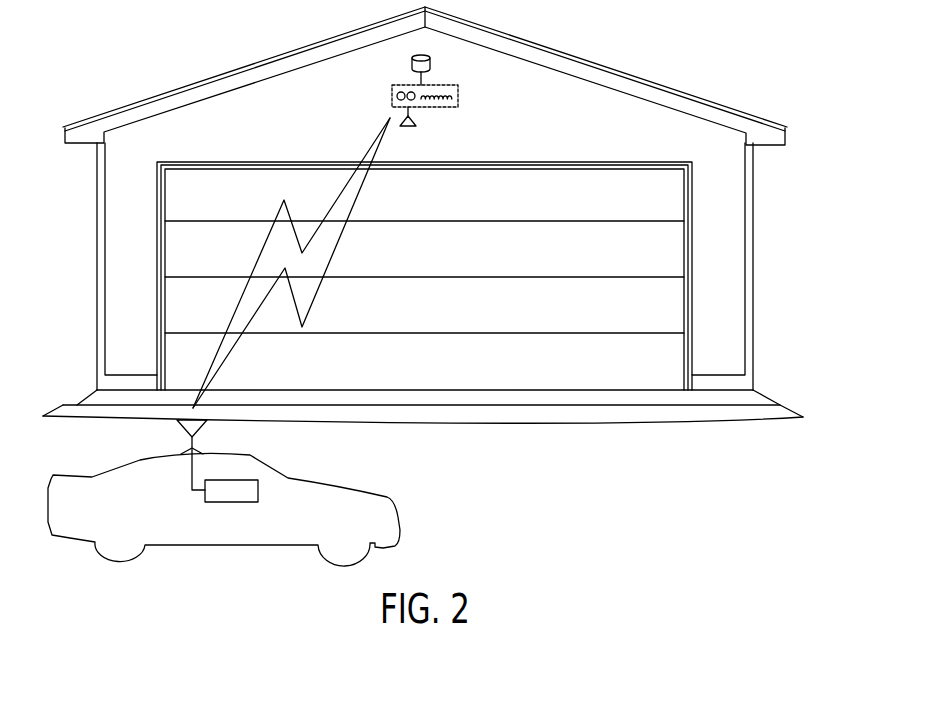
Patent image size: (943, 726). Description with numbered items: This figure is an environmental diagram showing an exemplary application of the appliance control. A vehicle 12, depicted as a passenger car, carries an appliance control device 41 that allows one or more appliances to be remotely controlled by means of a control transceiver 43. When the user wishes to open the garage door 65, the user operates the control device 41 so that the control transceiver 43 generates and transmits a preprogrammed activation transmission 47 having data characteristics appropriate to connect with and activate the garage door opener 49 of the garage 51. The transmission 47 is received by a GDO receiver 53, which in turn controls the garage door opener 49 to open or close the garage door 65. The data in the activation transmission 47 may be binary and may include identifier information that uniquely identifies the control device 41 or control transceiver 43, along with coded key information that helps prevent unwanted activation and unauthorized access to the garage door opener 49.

The vehicle 12 is at (405, 517).
The appliance control device 41 is at (252, 490).
The control transceiver 43 is at (180, 428).
The activation transmission 47 is at (316, 292).
The garage door opener 49 is at (458, 95).
The garage 51 is at (640, 76).
The GDO receiver 53 is at (416, 124).
The garage door 65 is at (412, 66).